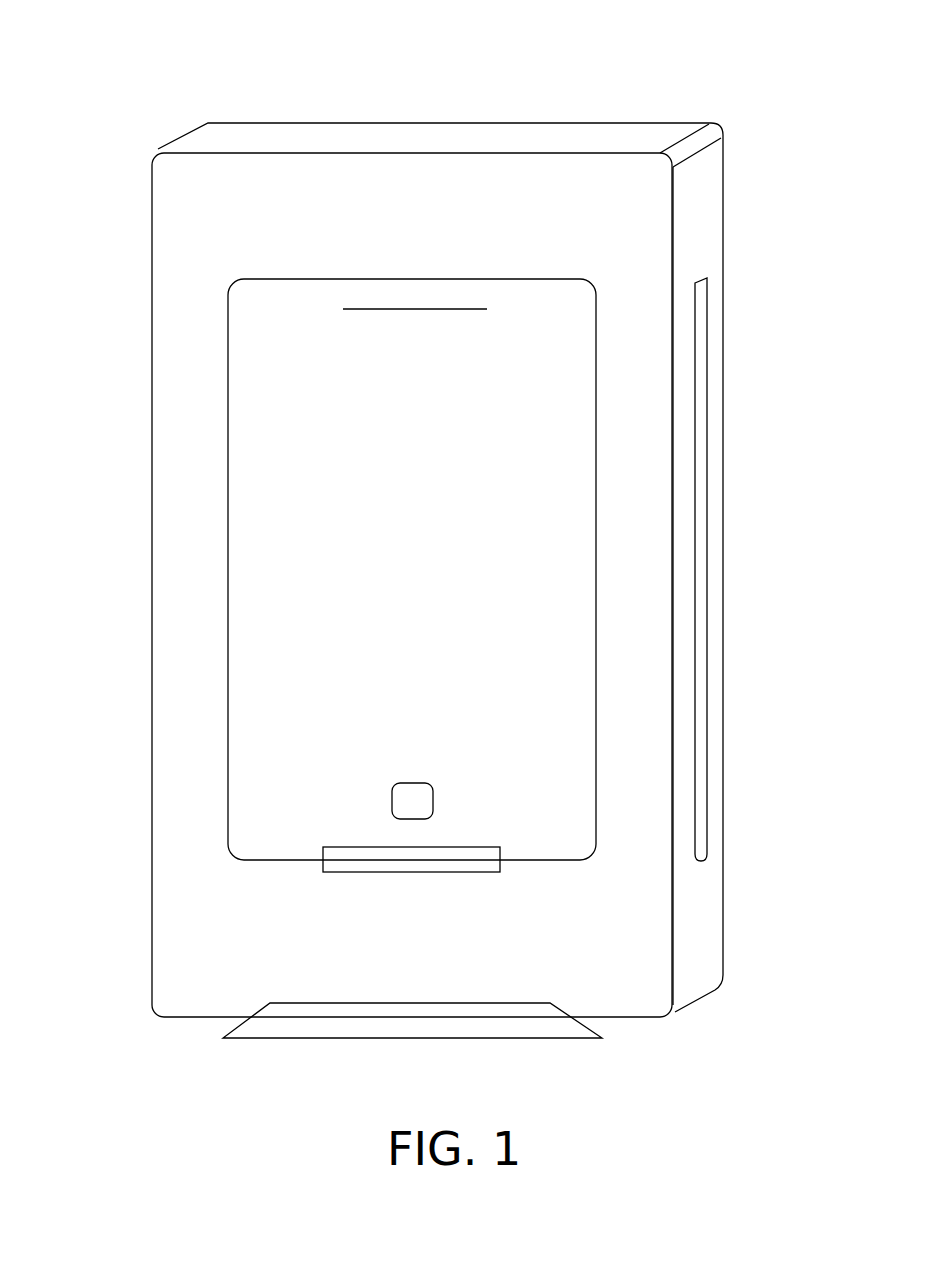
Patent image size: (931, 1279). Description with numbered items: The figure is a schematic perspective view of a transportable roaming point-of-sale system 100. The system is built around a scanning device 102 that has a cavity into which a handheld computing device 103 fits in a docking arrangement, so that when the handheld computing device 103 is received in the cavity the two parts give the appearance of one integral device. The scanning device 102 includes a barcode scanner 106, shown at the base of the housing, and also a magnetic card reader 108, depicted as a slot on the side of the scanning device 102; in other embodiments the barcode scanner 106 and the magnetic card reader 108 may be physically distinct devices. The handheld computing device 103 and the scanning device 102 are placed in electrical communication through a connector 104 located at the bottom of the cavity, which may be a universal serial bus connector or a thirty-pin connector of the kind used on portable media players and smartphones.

The roaming point-of-sale system 100 is at (550, 86).
The scanning device 102 is at (152, 622).
The handheld computing device 103 is at (228, 348).
The connector 104 is at (500, 866).
The barcode scanner 106 is at (240, 1022).
The magnetic card reader 108 is at (707, 512).